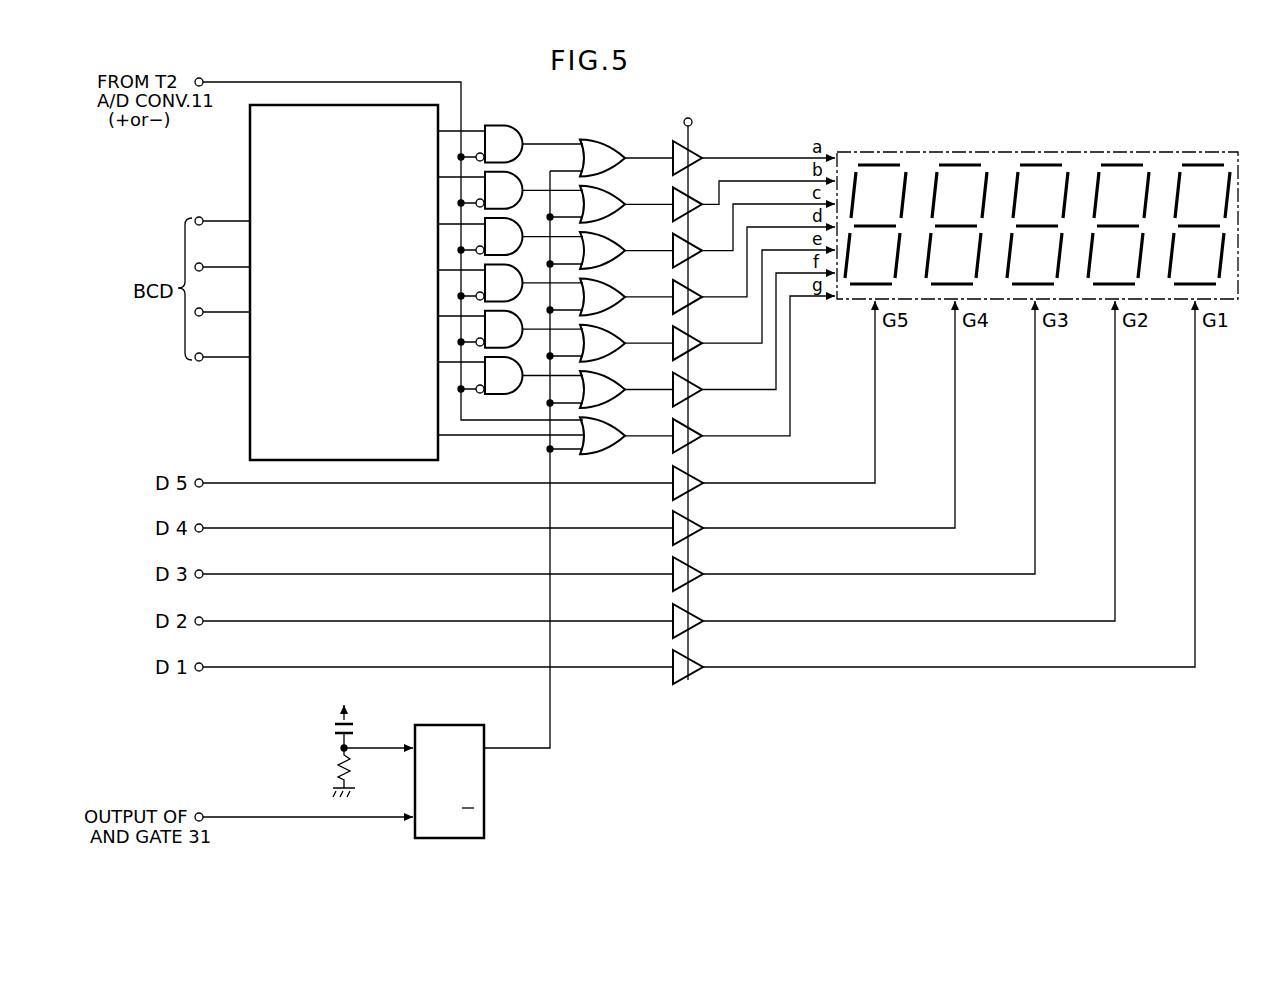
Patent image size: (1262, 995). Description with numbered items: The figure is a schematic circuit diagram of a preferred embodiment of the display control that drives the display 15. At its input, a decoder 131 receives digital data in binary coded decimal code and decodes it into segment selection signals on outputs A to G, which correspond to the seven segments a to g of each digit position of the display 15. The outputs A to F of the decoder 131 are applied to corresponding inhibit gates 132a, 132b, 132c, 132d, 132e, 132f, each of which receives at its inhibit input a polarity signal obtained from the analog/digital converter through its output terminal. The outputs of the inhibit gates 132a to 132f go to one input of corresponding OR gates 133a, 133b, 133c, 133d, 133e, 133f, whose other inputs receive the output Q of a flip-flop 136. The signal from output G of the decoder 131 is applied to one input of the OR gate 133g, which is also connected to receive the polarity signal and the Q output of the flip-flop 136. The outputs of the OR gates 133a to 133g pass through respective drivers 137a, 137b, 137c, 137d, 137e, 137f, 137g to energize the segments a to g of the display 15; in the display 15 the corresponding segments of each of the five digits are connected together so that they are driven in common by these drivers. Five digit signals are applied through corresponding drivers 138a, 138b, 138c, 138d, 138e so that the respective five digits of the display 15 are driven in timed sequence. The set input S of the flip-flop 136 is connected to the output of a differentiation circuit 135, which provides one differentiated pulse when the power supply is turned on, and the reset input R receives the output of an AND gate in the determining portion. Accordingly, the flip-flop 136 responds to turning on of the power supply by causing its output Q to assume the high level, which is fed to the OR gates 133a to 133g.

The decoder 131 is at (252, 148).
The inhibit gate 132a is at (510, 134).
The inhibit gate 132b is at (510, 180).
The inhibit gate 132c is at (519, 216).
The inhibit gate 132d is at (519, 262).
The inhibit gate 132e is at (511, 318).
The inhibit gate 132f is at (519, 354).
The OR gate 133a is at (607, 142).
The OR gate 133b is at (614, 198).
The OR gate 133c is at (614, 243).
The OR gate 133d is at (614, 291).
The OR gate 133e is at (614, 338).
The OR gate 133f is at (614, 384).
The OR gate 133g is at (614, 431).
The driver 137a is at (694, 152).
The driver 137b is at (691, 213).
The driver 137c is at (691, 259).
The driver 137d is at (691, 304).
The driver 137e is at (691, 350).
The driver 137f is at (691, 396).
The driver 137g is at (691, 442).
The driver 138a is at (693, 667).
The driver 138b is at (693, 621).
The driver 138c is at (693, 575).
The driver 138d is at (693, 529).
The driver 138e is at (674, 490).
The display 15 is at (1073, 152).
The differentiation circuit 135 is at (364, 737).
The flip-flop 136 is at (445, 725).